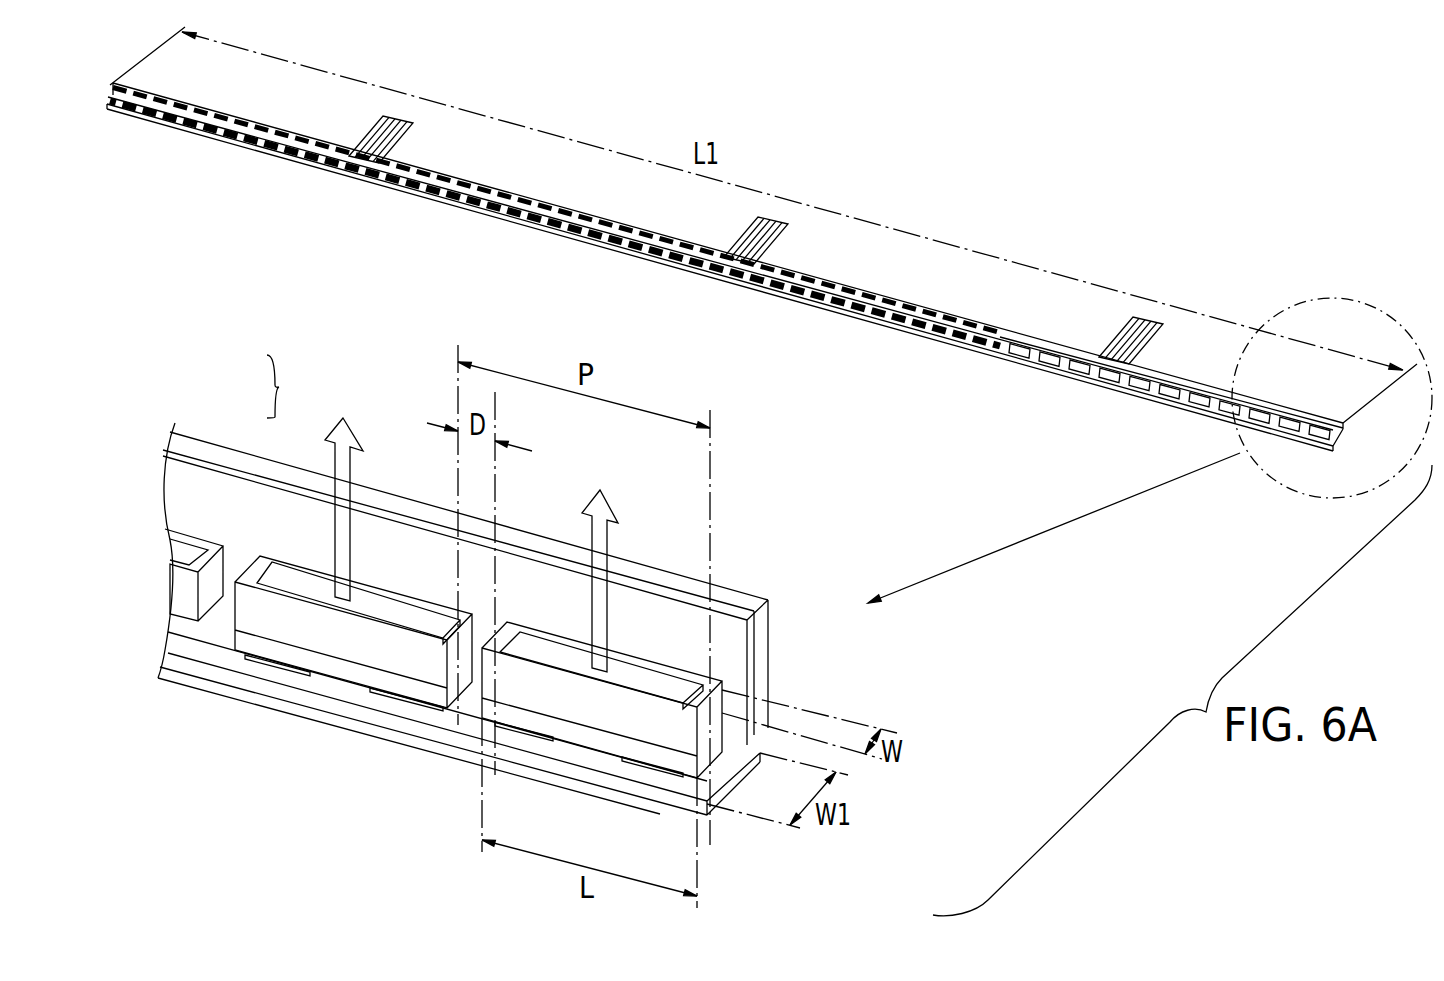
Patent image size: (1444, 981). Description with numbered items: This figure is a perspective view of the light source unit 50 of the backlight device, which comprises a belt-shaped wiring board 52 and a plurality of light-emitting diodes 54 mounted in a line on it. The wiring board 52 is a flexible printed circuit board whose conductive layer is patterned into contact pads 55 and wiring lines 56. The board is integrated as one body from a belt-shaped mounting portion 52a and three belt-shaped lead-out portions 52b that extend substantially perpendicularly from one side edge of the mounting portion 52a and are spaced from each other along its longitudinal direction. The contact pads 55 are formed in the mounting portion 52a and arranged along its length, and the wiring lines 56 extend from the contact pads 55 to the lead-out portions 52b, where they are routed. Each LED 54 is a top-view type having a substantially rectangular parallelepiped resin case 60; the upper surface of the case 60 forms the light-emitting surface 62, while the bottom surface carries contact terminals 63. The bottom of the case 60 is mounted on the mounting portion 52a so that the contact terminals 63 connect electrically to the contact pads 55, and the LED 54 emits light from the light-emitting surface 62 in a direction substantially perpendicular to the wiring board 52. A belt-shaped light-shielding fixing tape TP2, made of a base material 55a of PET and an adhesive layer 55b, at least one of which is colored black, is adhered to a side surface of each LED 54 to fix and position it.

The light source unit 50 is at (738, 312).
The wiring board 52 is at (900, 337).
The mounting portion 52a is at (985, 357).
The lead-out portion 52b is at (786, 210).
The light-emitting diode 54 is at (1190, 402).
The contact pad 55 is at (250, 657).
The base material 55a is at (185, 445).
The adhesive layer 55b is at (207, 463).
The wiring line 56 is at (416, 150).
The case 60 is at (365, 653).
The light-emitting surface 62 is at (392, 606).
The contact terminal 63 is at (282, 669).
The fixing tape TP2 is at (625, 516).